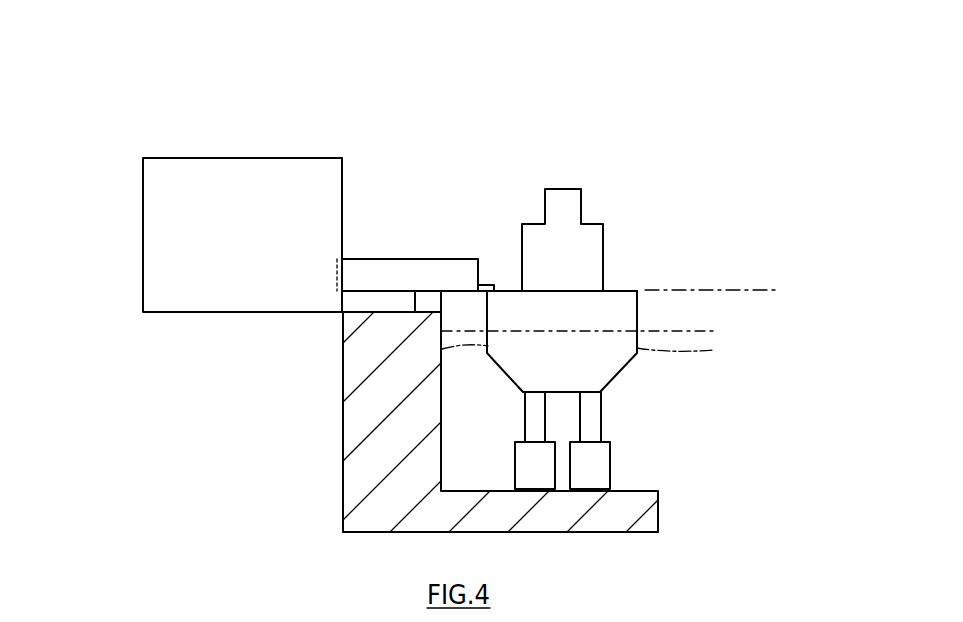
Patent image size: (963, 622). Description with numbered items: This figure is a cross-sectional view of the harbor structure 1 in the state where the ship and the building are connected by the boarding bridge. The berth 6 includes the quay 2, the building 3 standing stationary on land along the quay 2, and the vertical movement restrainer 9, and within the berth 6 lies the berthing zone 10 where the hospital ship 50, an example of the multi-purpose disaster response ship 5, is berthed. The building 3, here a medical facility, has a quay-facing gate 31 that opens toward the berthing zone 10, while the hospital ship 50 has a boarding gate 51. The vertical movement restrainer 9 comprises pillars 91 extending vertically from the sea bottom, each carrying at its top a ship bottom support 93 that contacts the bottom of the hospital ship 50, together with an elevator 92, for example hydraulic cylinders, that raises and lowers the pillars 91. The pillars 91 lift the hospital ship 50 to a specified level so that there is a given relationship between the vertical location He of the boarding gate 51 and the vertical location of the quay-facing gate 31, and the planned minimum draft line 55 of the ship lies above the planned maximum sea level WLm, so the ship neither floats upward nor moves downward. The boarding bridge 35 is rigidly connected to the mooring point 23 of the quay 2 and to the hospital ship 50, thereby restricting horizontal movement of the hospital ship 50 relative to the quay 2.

The harbor structure 1 is at (499, 312).
The berthing zone 10 is at (665, 272).
The quay 2 is at (360, 311).
The mooring point 23 is at (415, 306).
The building 3 is at (222, 158).
The quay-facing gate 31 is at (410, 197).
The boarding bridge 35 is at (437, 259).
The multi-purpose disaster response ship 5 is at (539, 243).
The hospital ship 50 is at (562, 188).
The boarding gate 51 is at (490, 282).
The planned minimum draft line 55 is at (602, 323).
The berth 6 is at (330, 135).
The vertical movement restrainer 9 is at (604, 425).
The pillar 91 is at (525, 420).
The elevator 92 is at (515, 463).
The ship bottom support 93 is at (522, 390).
The vertical location of the boarding gate He is at (732, 292).
The planned maximum sea level WLm is at (608, 335).